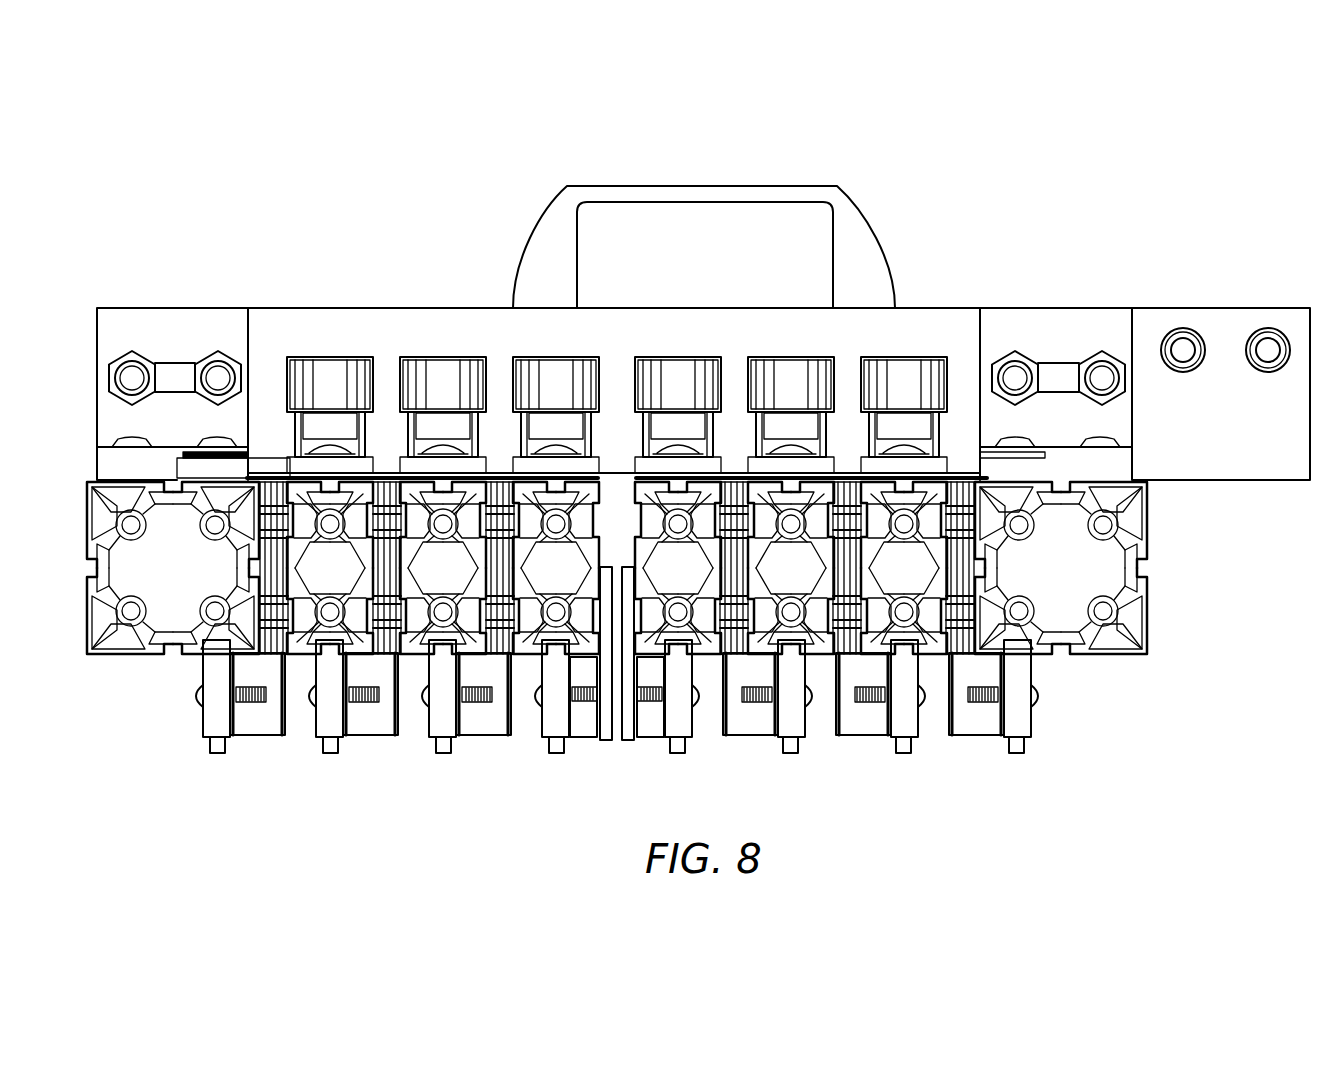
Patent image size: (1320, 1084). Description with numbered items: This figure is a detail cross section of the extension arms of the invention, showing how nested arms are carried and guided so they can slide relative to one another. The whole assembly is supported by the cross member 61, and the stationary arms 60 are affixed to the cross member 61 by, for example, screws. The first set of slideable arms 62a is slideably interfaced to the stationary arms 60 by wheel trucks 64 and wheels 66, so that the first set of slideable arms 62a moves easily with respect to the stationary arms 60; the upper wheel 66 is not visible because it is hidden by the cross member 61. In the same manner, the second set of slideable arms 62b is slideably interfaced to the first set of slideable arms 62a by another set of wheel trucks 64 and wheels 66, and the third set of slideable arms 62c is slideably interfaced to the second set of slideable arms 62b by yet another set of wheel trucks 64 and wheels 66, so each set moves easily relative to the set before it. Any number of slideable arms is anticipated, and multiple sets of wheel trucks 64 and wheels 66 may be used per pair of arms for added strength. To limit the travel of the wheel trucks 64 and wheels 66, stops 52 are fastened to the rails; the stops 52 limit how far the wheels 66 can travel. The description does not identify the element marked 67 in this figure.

The stop 52 is at (330, 382).
The stationary arm 60 is at (178, 652).
The cross member 61 is at (658, 326).
The first set of slideable arms 62a is at (297, 647).
The second set of slideable arms 62b is at (410, 647).
The third set of slideable arms 62c is at (523, 657).
The wheel truck 64 is at (273, 647).
The wheel 66 is at (212, 747).
The end block 67 is at (162, 325).